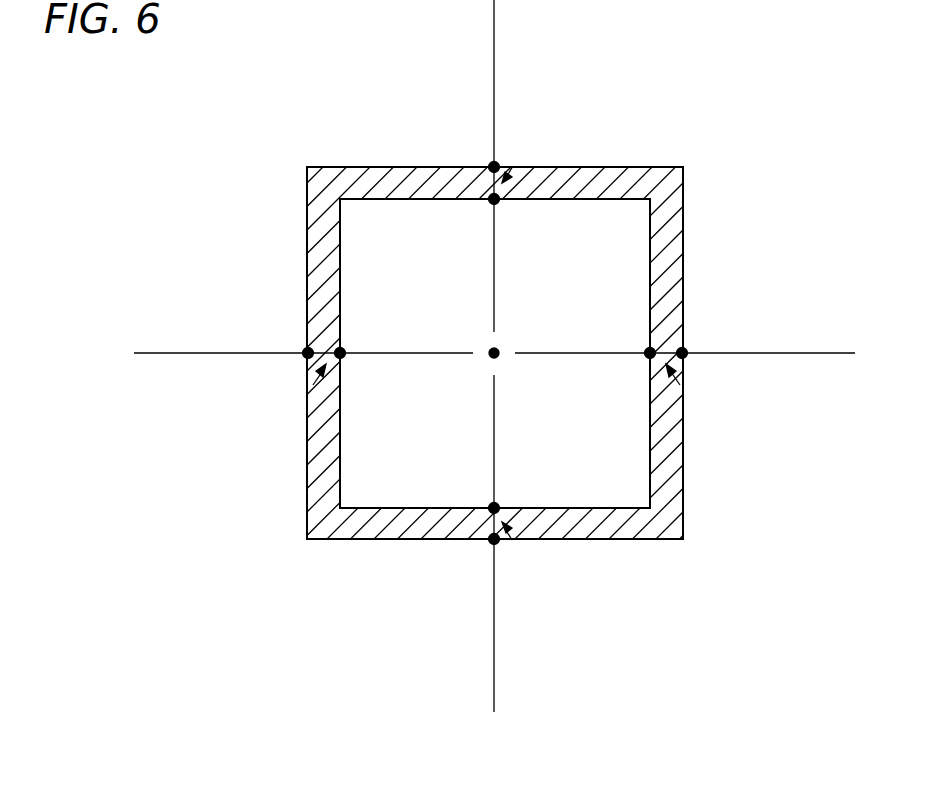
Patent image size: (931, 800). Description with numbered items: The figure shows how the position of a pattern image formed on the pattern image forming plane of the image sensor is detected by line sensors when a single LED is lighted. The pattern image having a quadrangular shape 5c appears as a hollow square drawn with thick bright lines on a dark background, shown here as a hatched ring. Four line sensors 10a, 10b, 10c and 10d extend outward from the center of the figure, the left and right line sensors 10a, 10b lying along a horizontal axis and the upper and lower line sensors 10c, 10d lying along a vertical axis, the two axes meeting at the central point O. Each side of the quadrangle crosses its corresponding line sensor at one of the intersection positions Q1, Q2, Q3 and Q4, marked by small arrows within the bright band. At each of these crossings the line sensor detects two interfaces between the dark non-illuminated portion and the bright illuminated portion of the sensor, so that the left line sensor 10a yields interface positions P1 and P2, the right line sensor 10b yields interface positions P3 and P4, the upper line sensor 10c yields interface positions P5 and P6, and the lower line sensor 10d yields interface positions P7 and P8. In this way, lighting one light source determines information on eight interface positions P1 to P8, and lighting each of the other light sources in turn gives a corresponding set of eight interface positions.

The pattern image having a quadrangular shape 5c is at (640, 166).
The line sensor 10a is at (219, 352).
The line sensor 10b is at (770, 352).
The line sensor 10c is at (495, 54).
The line sensor 10d is at (495, 651).
The center point O is at (490, 358).
The interface position P1 is at (304, 351).
The interface position P2 is at (344, 351).
The interface position P3 is at (646, 351).
The interface position P4 is at (686, 351).
The interface position P5 is at (490, 164).
The interface position P6 is at (490, 203).
The interface position P7 is at (490, 505).
The interface position P8 is at (490, 543).
The intersection position Q1 is at (313, 385).
The intersection position Q2 is at (680, 385).
The intersection position Q3 is at (513, 166).
The intersection position Q4 is at (512, 540).